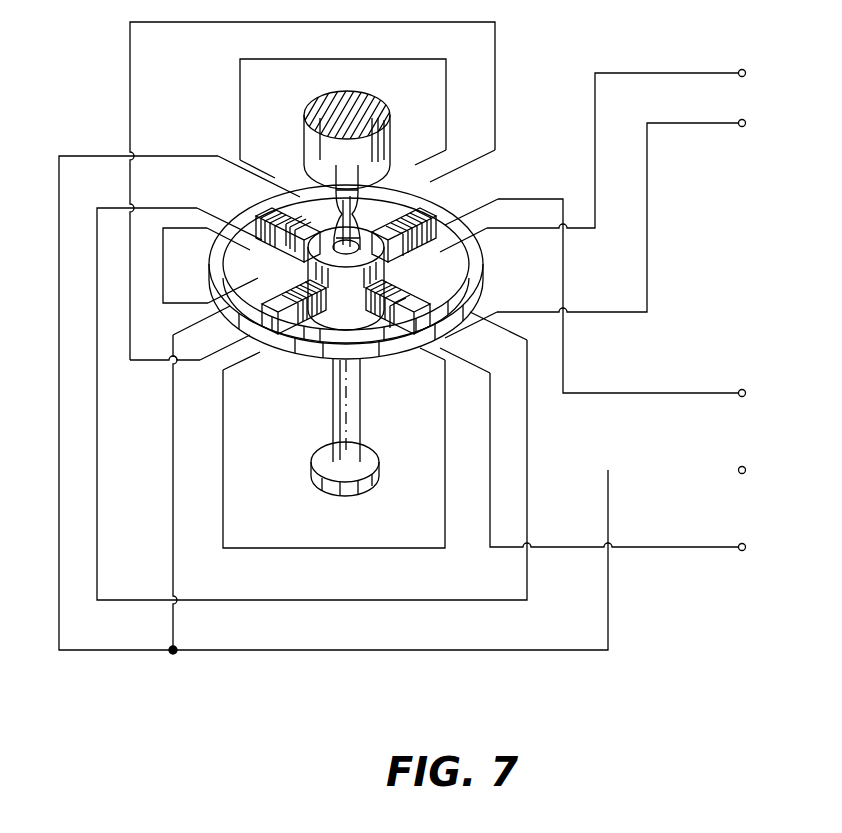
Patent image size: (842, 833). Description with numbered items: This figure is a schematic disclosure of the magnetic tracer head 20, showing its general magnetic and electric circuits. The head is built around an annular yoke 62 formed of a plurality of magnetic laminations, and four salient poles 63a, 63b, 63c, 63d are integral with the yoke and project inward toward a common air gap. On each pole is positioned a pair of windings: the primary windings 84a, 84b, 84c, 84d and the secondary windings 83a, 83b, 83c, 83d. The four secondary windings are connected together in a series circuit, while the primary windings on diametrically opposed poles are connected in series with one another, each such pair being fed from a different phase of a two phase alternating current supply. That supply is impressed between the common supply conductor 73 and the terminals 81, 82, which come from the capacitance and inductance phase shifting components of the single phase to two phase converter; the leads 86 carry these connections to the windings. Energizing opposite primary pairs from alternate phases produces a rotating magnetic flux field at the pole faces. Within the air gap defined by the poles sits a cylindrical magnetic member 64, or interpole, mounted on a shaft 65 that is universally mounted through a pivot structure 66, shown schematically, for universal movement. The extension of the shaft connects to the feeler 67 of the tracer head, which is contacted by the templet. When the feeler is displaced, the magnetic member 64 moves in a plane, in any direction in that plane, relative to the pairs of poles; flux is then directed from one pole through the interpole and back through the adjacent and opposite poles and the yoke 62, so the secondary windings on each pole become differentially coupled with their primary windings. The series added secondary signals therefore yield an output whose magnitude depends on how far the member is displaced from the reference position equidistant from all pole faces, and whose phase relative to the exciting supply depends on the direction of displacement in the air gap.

The tracer head 20 is at (400, 118).
The annular yoke 62 is at (478, 258).
The salient pole 63a is at (392, 214).
The salient pole 63b is at (240, 262).
The salient pole 63c is at (290, 338).
The salient pole 63d is at (404, 338).
The cylindrical magnetic member 64 is at (358, 287).
The shaft 65 is at (333, 424).
The pivot structure 66 is at (360, 190).
The feeler 67 is at (380, 474).
The conductor 73 is at (740, 467).
The terminal 81 is at (740, 390).
The terminal 82 is at (740, 544).
The secondary winding 83a is at (412, 254).
The secondary winding 83b is at (318, 206).
The secondary winding 83c is at (322, 326).
The secondary winding 83d is at (380, 328).
The primary winding 84a is at (430, 206).
The primary winding 84b is at (258, 201).
The primary winding 84c is at (242, 322).
The primary winding 84d is at (440, 326).
The terminal 86 is at (740, 70).